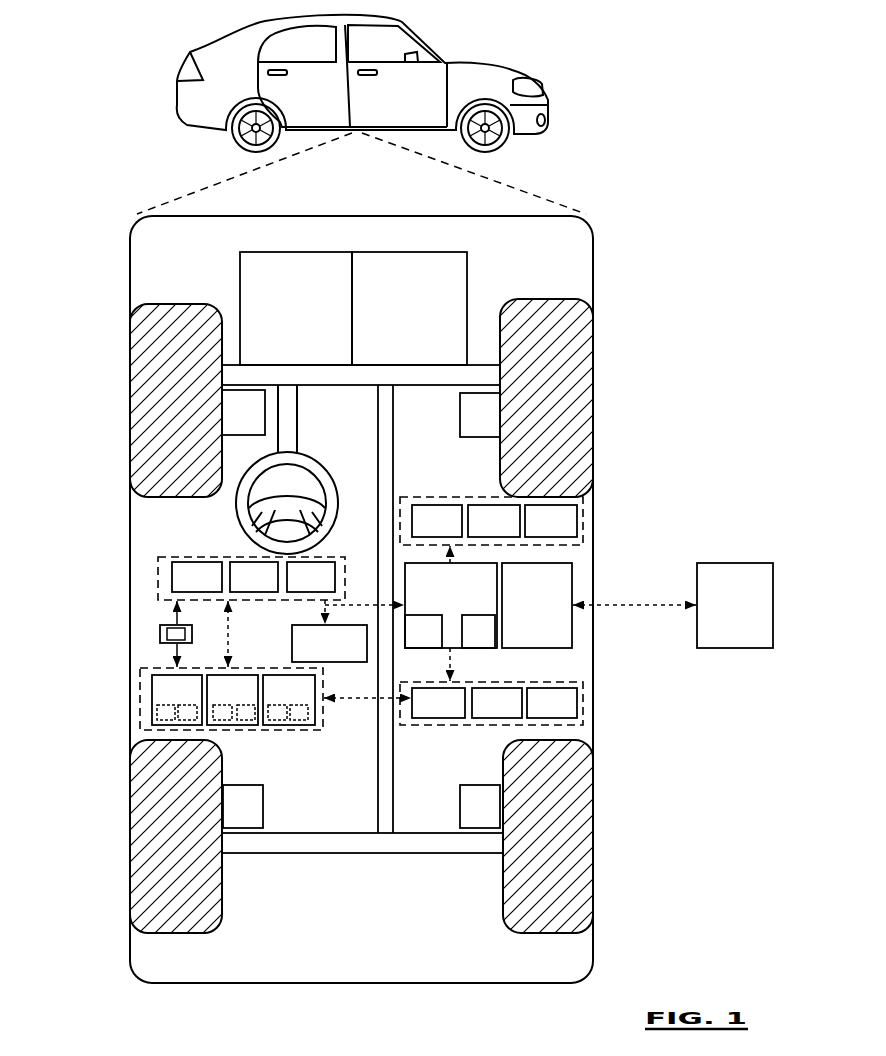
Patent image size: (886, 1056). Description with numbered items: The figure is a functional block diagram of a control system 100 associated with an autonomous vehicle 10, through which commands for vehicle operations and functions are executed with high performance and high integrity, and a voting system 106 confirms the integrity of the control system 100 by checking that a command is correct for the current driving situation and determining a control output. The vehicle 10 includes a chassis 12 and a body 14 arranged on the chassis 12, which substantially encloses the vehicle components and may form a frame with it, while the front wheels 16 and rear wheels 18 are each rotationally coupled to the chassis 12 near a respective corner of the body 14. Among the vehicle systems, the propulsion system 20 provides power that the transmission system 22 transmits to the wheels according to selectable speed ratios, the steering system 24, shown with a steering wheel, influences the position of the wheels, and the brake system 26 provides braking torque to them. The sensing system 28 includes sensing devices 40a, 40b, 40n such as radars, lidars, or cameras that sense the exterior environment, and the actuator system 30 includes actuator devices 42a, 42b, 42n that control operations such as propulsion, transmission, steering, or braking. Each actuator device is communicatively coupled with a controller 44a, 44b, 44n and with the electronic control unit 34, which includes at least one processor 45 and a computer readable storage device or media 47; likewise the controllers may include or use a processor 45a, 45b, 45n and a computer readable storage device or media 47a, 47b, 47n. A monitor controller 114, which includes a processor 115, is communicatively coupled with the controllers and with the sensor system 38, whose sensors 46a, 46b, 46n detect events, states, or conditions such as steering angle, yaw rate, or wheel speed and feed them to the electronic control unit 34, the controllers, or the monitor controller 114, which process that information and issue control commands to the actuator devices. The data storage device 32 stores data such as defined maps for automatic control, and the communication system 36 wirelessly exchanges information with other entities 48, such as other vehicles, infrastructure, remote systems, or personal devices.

The vehicle 10 is at (182, 73).
The control system 100 is at (620, 231).
The chassis 12 is at (378, 782).
The body 14 is at (130, 560).
The front wheels 16 is at (175, 304).
The rear wheels 18 is at (192, 933).
The propulsion system 20 is at (286, 317).
The transmission system 22 is at (400, 317).
The steering system 24 is at (316, 408).
The brake system 26 is at (233, 421).
The sensing system 28 is at (422, 496).
The actuator system 30 is at (393, 716).
The data storage device 32 is at (320, 651).
The electronic control unit 34 is at (441, 600).
The communication system 36 is at (527, 614).
The sensor system 38 is at (285, 601).
The sensing device 40a is at (422, 530).
The sensing device 40b is at (479, 530).
The sensing device 40n is at (536, 530).
The actuator device 42a is at (423, 712).
The actuator device 42b is at (482, 712).
The actuator device 42n is at (537, 712).
The controller 44a is at (162, 699).
The controller 44b is at (217, 699).
The controller 44n is at (274, 699).
The processor 45 is at (414, 640).
The computer readable storage device or media 47 is at (469, 640).
The processor 45a is at (157, 710).
The processor 45b is at (224, 722).
The processor 45n is at (277, 722).
The computer readable storage device or media 47a is at (178, 714).
The computer readable storage device or media 47b is at (250, 723).
The computer readable storage device or media 47n is at (310, 723).
The sensor 46a is at (182, 586).
The sensor 46b is at (239, 586).
The sensor 46n is at (296, 586).
The other entities 48 is at (725, 614).
The voting system 106 is at (128, 622).
The monitor controller 114 is at (160, 632).
The processor 115 is at (167, 638).